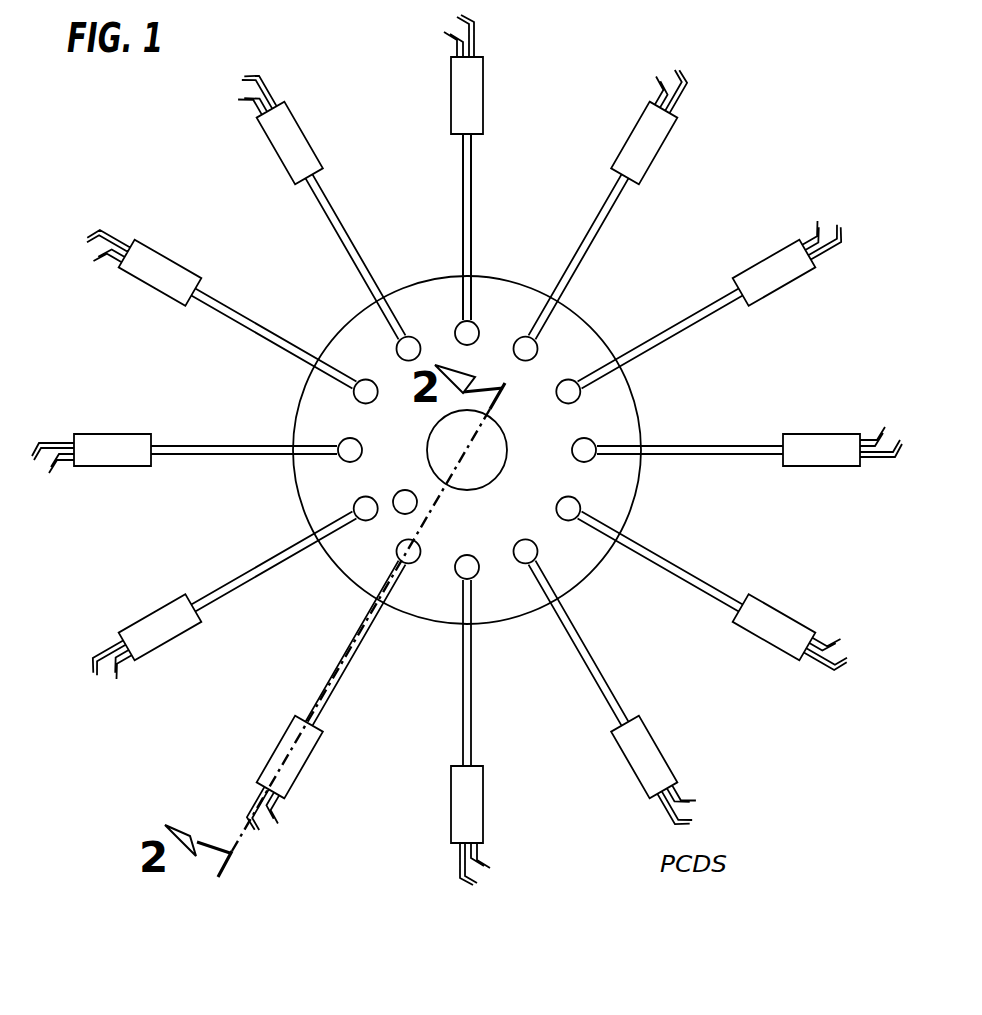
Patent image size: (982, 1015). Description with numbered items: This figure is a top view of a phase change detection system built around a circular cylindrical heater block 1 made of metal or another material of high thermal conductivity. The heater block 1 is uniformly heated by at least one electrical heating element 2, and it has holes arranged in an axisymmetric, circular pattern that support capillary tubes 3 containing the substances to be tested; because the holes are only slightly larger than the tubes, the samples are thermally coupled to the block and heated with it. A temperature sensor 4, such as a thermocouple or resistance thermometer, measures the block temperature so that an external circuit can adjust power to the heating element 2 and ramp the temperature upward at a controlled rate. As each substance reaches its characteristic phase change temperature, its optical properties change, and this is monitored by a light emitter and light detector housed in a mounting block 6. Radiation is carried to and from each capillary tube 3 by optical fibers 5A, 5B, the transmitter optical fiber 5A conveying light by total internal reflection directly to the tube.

The heater block 1 is at (580, 312).
The electrical heating element 2 is at (507, 433).
The capillary tubes 3 is at (358, 442).
The temperature sensor 4 is at (393, 515).
The transmitter optical fiber 5A is at (470, 180).
The optical fiber 5B is at (467, 227).
The mounting block 6 is at (449, 85).